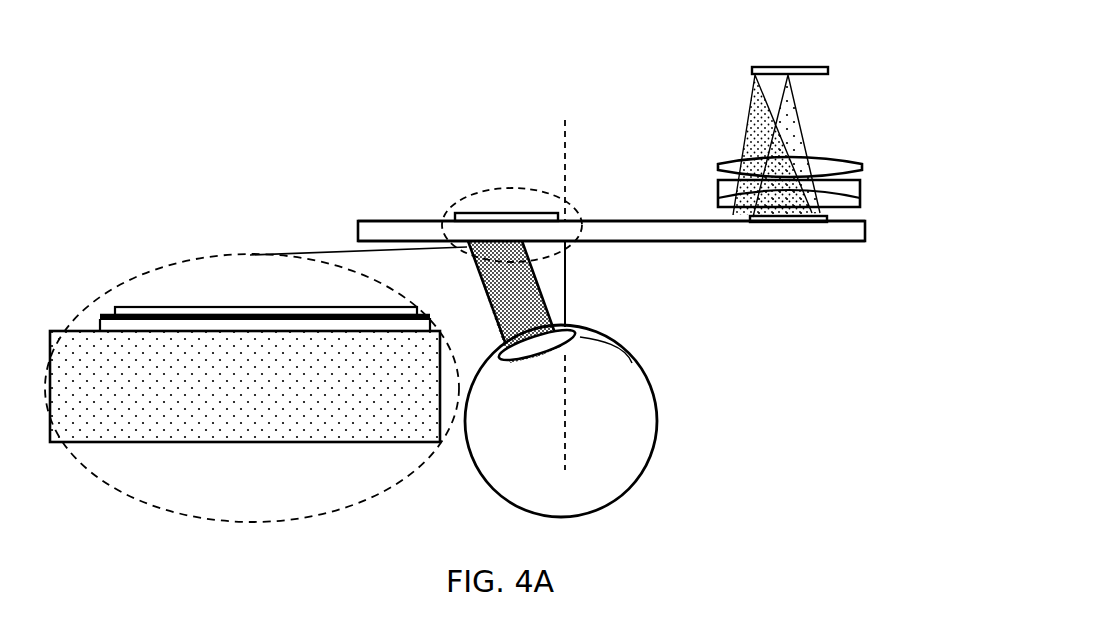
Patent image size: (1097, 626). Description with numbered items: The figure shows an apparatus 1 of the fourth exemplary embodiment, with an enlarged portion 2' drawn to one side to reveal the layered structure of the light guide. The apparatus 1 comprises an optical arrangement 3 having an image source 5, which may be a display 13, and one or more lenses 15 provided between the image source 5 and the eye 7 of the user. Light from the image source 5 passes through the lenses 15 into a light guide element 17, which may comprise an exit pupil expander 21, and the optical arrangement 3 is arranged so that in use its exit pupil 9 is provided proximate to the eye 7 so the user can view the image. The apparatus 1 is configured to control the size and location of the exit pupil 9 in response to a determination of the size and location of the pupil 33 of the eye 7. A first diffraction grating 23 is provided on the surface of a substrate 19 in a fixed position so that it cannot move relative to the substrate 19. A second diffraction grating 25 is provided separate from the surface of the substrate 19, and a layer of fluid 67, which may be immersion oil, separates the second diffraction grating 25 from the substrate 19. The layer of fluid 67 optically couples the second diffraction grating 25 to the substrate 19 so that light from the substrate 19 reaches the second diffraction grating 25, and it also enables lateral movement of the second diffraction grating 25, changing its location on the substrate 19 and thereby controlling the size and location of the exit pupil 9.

The apparatus 1 is at (865, 149).
The enlarged portion 2' is at (252, 366).
The optical arrangement 3 is at (850, 119).
The image source 5 is at (828, 70).
The eye 7 is at (653, 448).
The exit pupil 9 is at (568, 335).
The display 13 is at (788, 68).
The lenses 15 is at (860, 200).
The light guide element 17 is at (688, 220).
The substrate 19 is at (840, 243).
The exit pupil expander 21 is at (677, 242).
The first diffraction grating 23 is at (825, 224).
The second diffraction grating 25 is at (265, 310).
The pupil 33 is at (632, 363).
The layer of fluid 67 is at (188, 333).